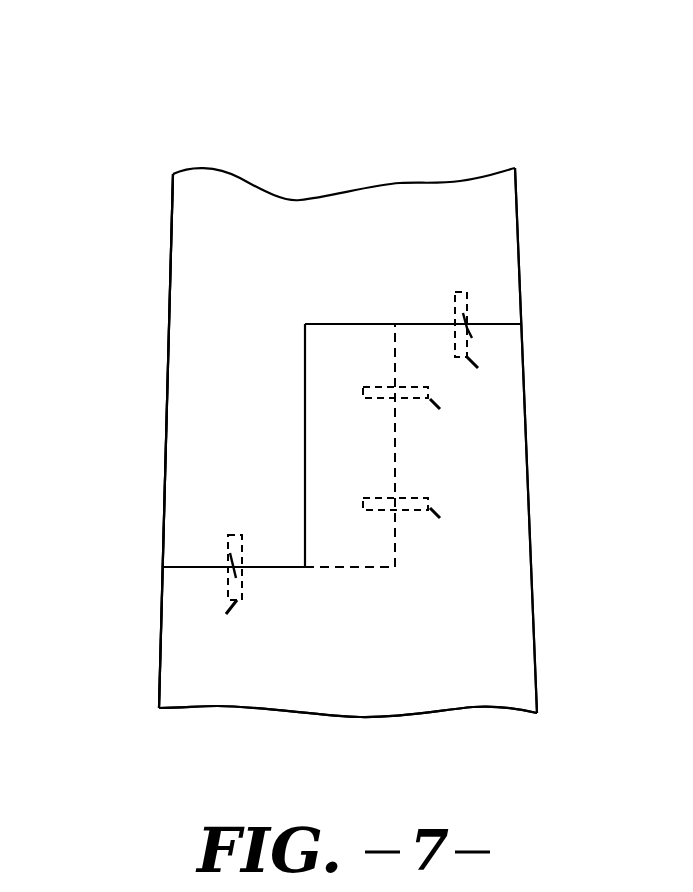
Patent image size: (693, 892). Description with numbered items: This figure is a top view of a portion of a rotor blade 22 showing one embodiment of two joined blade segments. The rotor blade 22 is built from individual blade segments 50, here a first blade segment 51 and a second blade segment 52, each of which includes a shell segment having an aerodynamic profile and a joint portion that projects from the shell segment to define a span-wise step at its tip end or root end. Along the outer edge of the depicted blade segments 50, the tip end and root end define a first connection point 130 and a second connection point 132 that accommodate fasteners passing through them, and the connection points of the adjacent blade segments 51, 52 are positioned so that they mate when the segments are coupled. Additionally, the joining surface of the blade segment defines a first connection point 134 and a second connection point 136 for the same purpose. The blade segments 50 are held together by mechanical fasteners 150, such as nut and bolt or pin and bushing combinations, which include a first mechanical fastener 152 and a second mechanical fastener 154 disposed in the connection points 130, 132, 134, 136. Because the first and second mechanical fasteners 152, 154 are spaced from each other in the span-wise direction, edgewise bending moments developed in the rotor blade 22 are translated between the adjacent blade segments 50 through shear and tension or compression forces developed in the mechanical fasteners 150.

The rotor blade 22 is at (565, 189).
The blade segment 50 is at (133, 259).
The first blade segment 51 is at (190, 378).
The second blade segment 52 is at (492, 688).
The first connection point 130 is at (228, 548).
The second connection point 132 is at (470, 296).
The first connection point 134 is at (403, 513).
The second connection point 136 is at (401, 403).
The mechanical fastener 150 is at (474, 363).
The first mechanical fastener 152 is at (229, 580).
The second mechanical fastener 154 is at (469, 331).